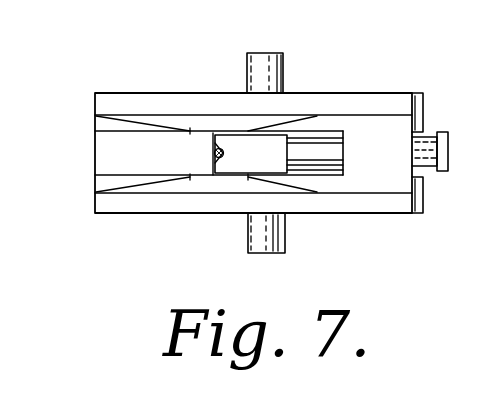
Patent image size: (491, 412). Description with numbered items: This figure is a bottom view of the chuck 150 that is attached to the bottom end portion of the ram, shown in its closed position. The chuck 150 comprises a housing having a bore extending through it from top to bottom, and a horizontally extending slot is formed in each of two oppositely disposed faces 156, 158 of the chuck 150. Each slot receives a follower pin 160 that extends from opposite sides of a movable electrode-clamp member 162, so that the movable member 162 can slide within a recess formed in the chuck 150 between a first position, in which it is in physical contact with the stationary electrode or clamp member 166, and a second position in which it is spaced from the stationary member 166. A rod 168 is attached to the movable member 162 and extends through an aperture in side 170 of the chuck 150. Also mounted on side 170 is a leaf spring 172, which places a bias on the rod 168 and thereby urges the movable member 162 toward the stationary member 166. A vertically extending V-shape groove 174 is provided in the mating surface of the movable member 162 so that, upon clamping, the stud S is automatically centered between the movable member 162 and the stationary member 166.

The chuck 150 is at (200, 218).
The face 156 is at (175, 103).
The face 158 is at (367, 213).
The follower pin 160 is at (283, 63).
The movable electrode-clamp member 162 is at (272, 165).
The stationary electrode or clamp member 166 is at (160, 161).
The rod 168 is at (344, 143).
The side of chuck 170 is at (419, 113).
The leaf spring 172 is at (441, 172).
The V-shape groove 174 is at (224, 150).
The stud S is at (214, 152).